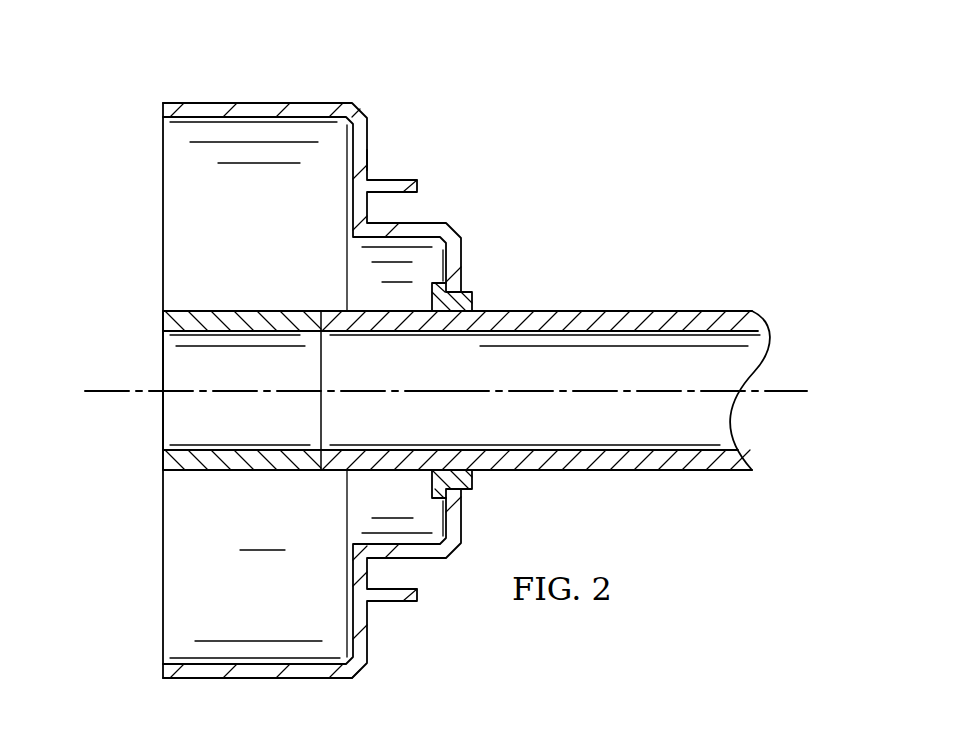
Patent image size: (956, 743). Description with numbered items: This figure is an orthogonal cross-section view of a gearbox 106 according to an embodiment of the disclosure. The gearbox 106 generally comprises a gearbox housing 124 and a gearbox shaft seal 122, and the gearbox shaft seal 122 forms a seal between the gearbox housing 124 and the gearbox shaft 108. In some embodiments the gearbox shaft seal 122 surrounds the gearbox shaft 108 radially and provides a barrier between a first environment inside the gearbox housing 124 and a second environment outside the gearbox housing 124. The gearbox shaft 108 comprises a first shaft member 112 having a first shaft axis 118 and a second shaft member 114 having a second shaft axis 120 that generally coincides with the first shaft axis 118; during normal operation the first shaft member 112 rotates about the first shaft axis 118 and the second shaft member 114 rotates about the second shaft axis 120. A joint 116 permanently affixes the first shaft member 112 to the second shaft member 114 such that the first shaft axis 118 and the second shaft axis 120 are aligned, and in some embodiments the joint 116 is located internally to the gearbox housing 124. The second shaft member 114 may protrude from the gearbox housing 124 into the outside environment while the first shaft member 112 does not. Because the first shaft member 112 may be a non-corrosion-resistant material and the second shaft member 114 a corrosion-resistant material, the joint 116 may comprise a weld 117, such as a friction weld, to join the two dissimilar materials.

The gearbox 106 is at (455, 169).
The gearbox shaft 108 is at (682, 470).
The first shaft member 112 is at (240, 311).
The second shaft member 114 is at (703, 311).
The joint 116 is at (321, 411).
The weld 117 is at (321, 311).
The first shaft axis 118 is at (103, 391).
The second shaft axis 120 is at (785, 391).
The gearbox shaft seal 122 is at (474, 300).
The gearbox housing 124 is at (245, 103).